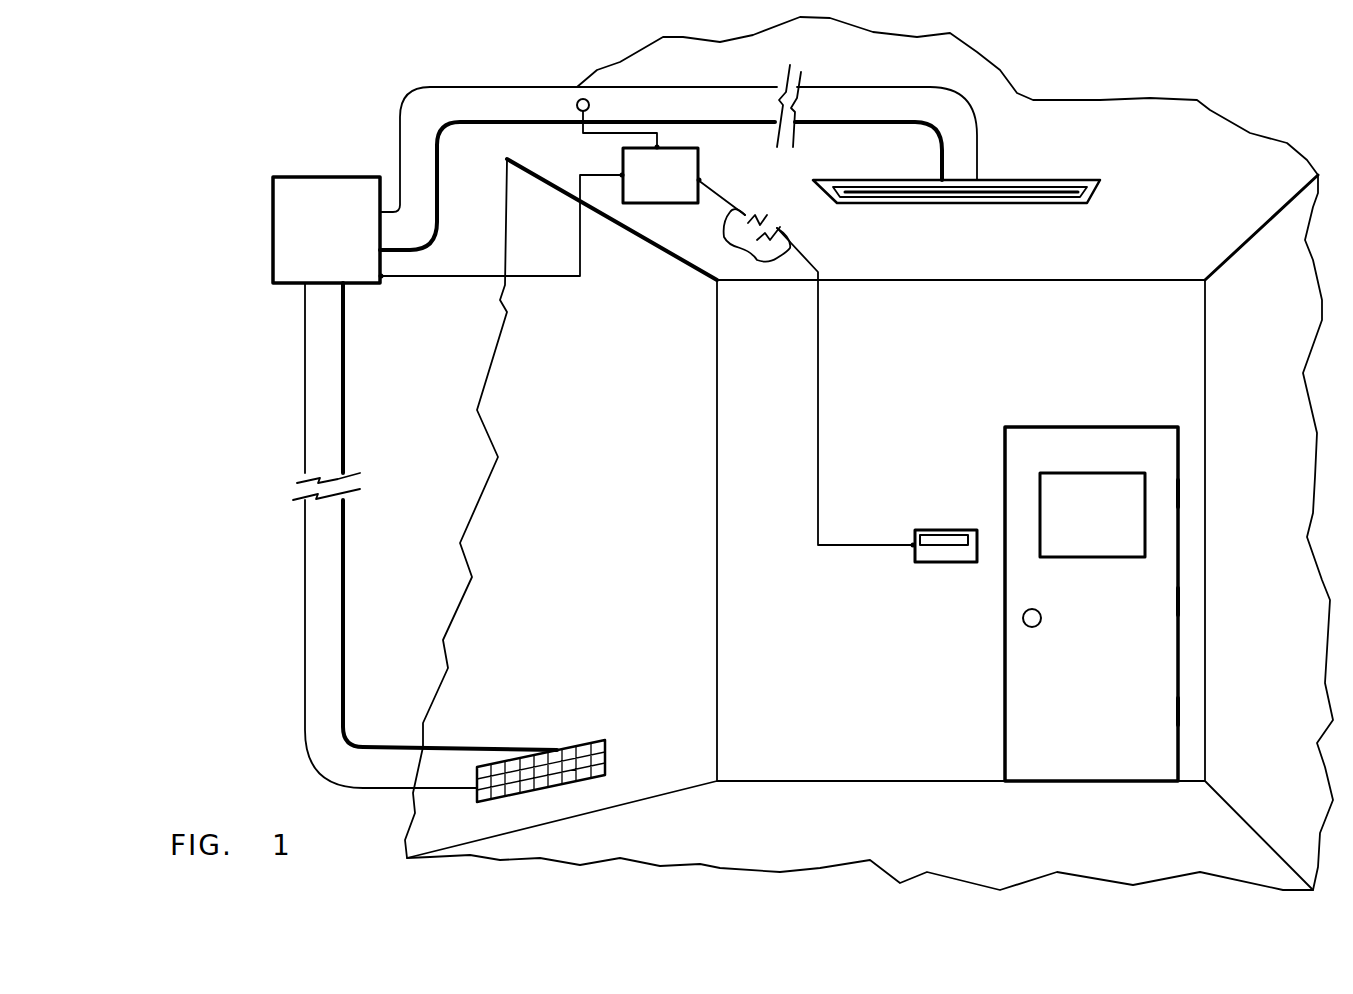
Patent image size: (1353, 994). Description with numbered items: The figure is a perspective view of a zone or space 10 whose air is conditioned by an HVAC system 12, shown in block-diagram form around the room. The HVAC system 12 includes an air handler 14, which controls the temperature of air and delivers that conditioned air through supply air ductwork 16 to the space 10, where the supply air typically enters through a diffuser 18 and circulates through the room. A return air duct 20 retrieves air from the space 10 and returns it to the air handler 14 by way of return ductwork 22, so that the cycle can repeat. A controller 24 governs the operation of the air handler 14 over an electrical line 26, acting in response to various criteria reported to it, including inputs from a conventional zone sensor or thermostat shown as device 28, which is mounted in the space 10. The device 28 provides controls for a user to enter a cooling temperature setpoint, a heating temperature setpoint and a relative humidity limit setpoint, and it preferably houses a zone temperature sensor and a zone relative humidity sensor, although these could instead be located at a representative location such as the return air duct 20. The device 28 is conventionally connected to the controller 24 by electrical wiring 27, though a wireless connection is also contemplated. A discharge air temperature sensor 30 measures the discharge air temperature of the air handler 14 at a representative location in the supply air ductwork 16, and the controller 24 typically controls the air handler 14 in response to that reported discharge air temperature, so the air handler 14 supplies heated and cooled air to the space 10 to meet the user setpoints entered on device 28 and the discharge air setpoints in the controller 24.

The zone or space 10 is at (1109, 351).
The HVAC system 12 is at (188, 102).
The air handler 14 is at (339, 243).
The supply air ductwork 16 is at (767, 87).
The diffuser 18 is at (865, 180).
The return air duct 20 is at (590, 740).
The return ductwork 22 is at (347, 452).
The controller 24 is at (675, 188).
The electrical line 26 is at (470, 277).
The electrical wiring 27 is at (724, 237).
The device 28 is at (945, 530).
The discharge air temperature sensor 30 is at (577, 105).